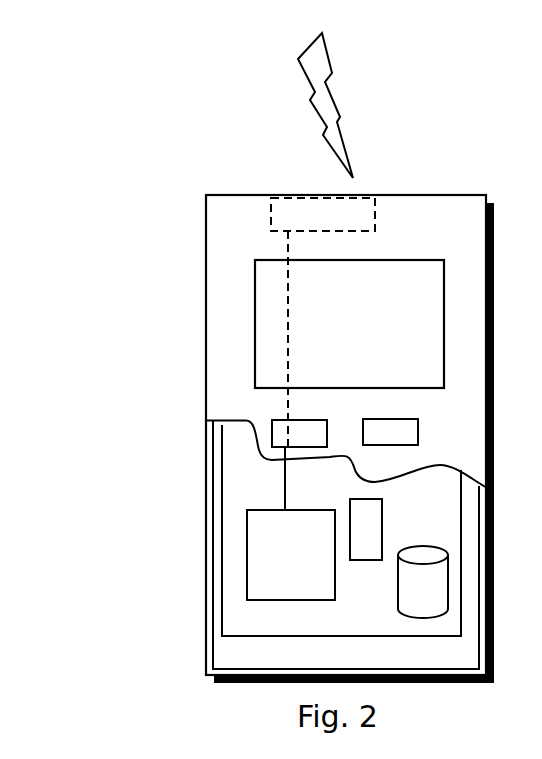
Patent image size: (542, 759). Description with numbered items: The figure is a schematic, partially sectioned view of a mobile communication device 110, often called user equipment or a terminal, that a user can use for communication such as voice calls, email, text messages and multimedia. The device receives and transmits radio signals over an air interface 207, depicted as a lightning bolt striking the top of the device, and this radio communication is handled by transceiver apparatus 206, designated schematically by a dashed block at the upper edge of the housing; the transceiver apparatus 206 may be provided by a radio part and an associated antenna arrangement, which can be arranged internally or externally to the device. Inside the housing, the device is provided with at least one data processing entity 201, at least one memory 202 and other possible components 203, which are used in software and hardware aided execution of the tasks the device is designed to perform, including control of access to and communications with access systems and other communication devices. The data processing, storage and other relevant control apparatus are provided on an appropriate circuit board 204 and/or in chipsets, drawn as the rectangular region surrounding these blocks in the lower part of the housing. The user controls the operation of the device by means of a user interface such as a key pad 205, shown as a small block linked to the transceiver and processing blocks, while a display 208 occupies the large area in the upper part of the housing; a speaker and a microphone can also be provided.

The communication device 110 is at (206, 237).
The data processing entity 201 is at (253, 540).
The memory 202 is at (417, 593).
The other possible components 203 is at (365, 515).
The circuit board 204 is at (245, 618).
The key pad 205 is at (275, 435).
The transceiver apparatus 206 is at (367, 212).
The air interface 207 is at (358, 127).
The display 208 is at (272, 312).